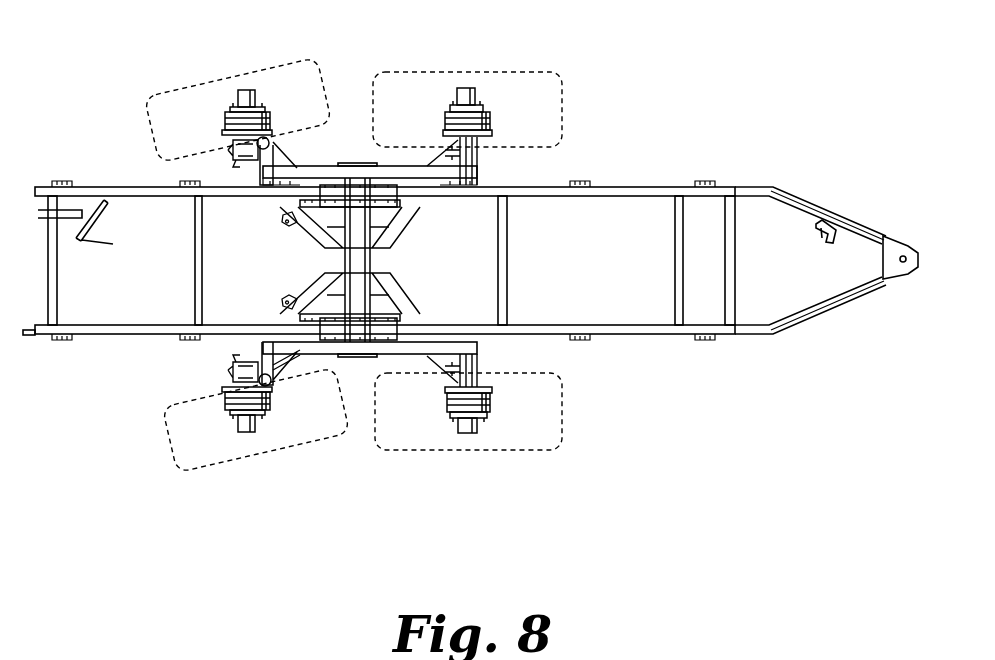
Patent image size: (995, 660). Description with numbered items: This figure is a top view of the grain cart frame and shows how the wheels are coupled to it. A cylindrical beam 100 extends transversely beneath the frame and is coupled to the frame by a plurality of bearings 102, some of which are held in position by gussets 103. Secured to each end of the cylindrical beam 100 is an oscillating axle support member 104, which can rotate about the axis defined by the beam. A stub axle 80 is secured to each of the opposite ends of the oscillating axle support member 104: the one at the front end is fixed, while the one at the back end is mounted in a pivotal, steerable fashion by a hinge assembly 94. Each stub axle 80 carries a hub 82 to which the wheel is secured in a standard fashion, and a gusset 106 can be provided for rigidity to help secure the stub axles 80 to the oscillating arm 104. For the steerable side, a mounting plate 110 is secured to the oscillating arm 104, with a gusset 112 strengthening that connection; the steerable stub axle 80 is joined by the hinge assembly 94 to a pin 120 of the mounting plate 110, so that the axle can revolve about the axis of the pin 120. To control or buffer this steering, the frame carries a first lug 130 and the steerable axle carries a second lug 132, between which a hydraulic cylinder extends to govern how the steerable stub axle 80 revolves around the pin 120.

The stub axle 80 is at (228, 400).
The hub 82 is at (238, 432).
The hinge assembly 94 is at (233, 375).
The cylindrical beam 100 is at (378, 262).
The bearings 102 is at (328, 166).
The gussets 103 is at (380, 207).
The oscillating axle support member 104 is at (410, 165).
The gusset 106 is at (437, 367).
The mounting plate 110 is at (255, 352).
The gusset 112 is at (292, 365).
The pin 120 is at (272, 378).
The first lug 130 is at (284, 222).
The second lug 132 is at (233, 163).